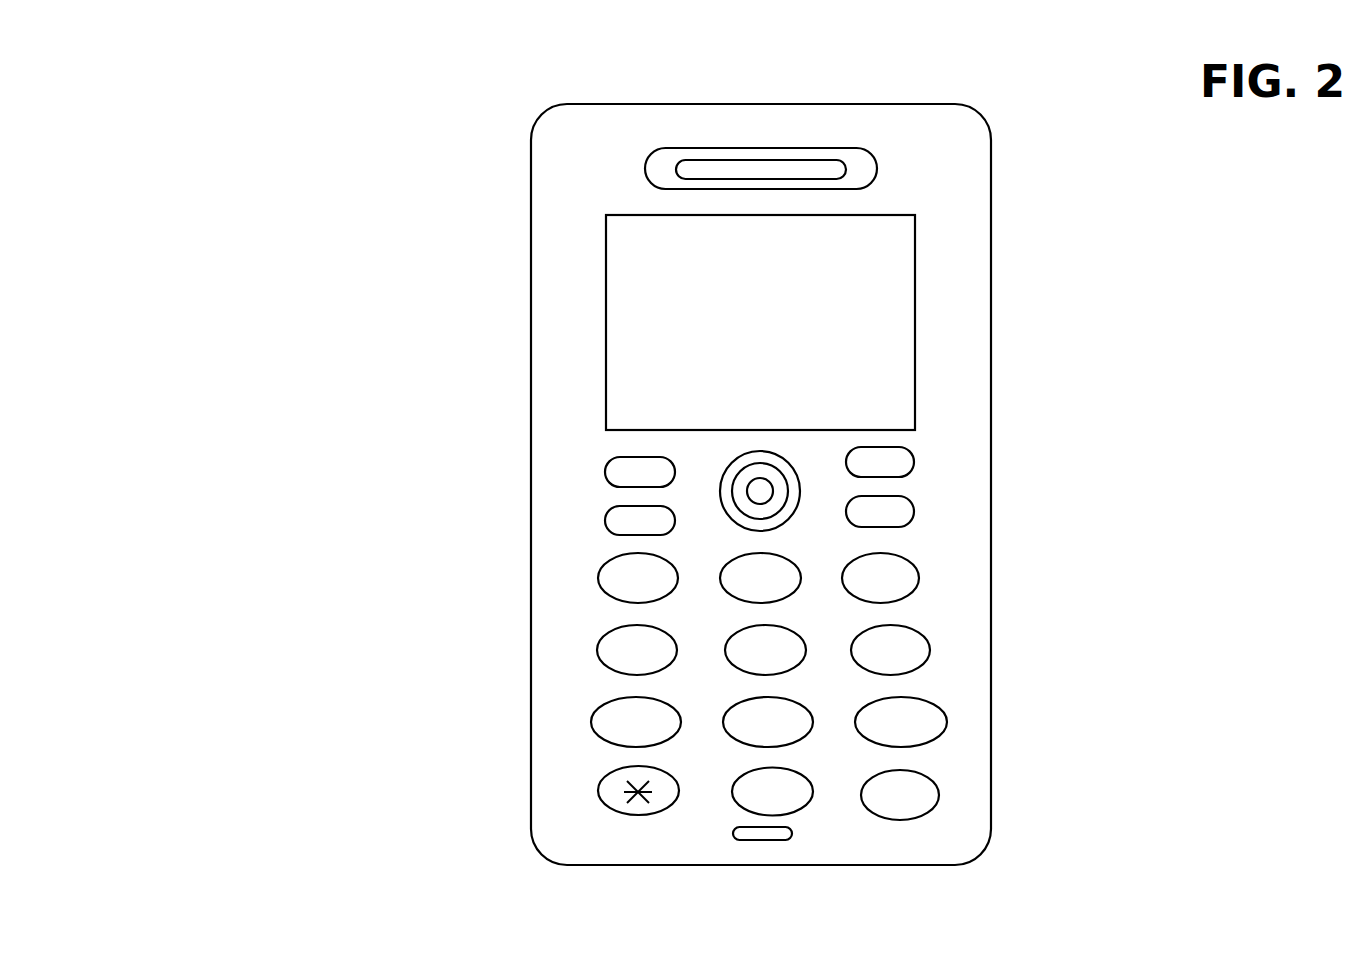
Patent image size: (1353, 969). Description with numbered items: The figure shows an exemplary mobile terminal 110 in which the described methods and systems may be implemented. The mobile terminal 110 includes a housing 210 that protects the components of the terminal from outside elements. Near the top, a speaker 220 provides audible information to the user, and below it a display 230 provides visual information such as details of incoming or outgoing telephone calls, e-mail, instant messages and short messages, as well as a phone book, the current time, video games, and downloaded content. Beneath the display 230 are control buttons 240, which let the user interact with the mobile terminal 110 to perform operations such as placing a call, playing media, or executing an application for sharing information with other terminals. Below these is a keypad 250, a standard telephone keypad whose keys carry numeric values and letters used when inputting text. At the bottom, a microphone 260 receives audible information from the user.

The mobile terminal 110 is at (204, 80).
The housing 210 is at (531, 153).
The speaker 220 is at (877, 166).
The display 230 is at (915, 329).
The control buttons 240 is at (933, 453).
The keypad 250 is at (958, 783).
The microphone 260 is at (763, 840).